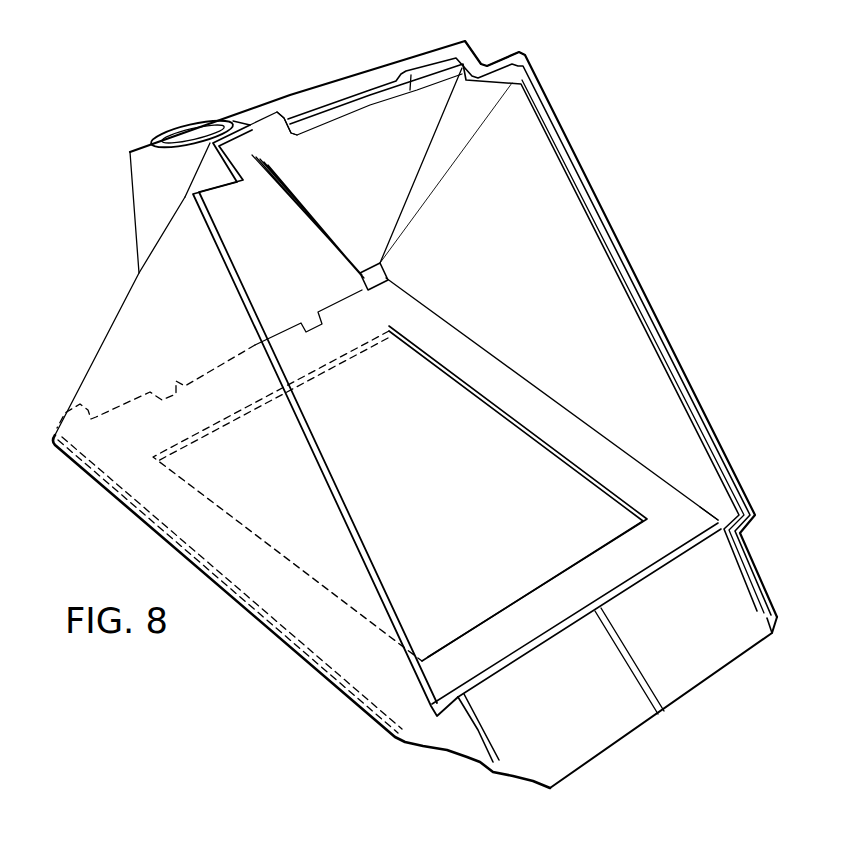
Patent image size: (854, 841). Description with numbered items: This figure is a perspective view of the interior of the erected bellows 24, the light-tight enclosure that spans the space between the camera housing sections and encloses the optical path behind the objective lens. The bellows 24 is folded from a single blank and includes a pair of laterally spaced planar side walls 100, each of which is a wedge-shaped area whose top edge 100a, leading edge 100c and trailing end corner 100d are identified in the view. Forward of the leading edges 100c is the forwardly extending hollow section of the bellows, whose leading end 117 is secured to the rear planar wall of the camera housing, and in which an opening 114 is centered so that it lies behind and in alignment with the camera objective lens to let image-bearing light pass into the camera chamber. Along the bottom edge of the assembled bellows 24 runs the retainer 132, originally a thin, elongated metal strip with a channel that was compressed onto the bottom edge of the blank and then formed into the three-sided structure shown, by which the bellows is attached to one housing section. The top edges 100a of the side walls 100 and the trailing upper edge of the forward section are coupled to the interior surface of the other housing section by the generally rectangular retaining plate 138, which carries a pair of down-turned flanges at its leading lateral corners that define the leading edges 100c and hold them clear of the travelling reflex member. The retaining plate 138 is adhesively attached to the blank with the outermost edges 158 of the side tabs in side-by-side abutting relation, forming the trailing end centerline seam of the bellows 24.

The erected bellows 24 is at (628, 228).
The side wall 100 is at (557, 278).
The top edge of side wall 100a is at (516, 366).
The leading edge of side wall 100c is at (445, 193).
The trailing end corner of side wall 100d is at (722, 507).
The opening 114 is at (190, 135).
The leading end of forwardly extending section 117 is at (256, 108).
The retainer 132 is at (506, 74).
The retaining plate 138 is at (495, 394).
The outermost edge of tab 158 is at (618, 658).